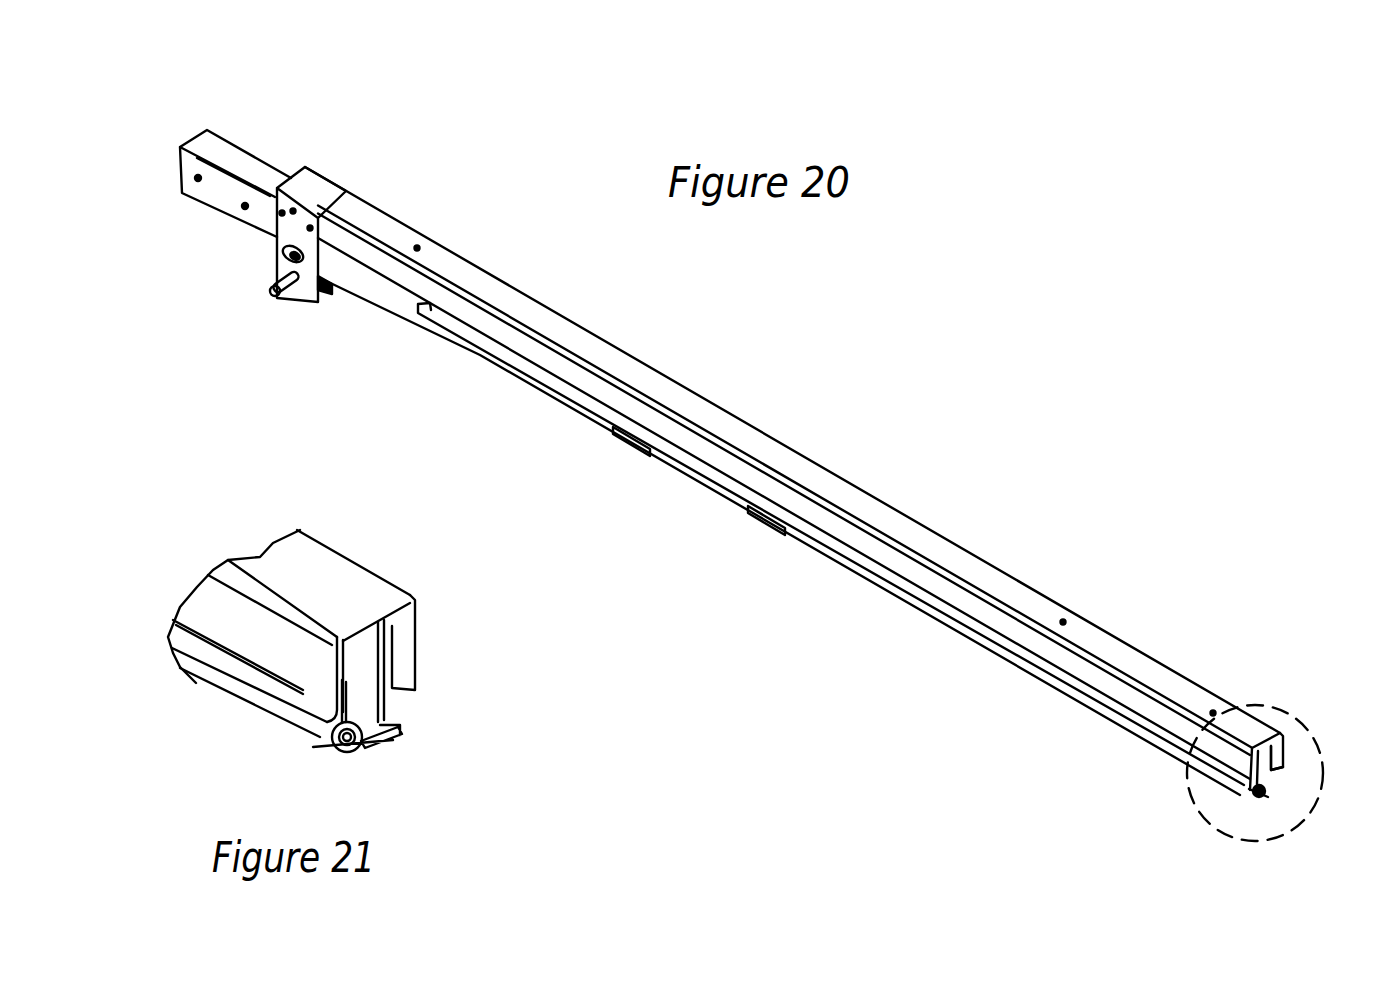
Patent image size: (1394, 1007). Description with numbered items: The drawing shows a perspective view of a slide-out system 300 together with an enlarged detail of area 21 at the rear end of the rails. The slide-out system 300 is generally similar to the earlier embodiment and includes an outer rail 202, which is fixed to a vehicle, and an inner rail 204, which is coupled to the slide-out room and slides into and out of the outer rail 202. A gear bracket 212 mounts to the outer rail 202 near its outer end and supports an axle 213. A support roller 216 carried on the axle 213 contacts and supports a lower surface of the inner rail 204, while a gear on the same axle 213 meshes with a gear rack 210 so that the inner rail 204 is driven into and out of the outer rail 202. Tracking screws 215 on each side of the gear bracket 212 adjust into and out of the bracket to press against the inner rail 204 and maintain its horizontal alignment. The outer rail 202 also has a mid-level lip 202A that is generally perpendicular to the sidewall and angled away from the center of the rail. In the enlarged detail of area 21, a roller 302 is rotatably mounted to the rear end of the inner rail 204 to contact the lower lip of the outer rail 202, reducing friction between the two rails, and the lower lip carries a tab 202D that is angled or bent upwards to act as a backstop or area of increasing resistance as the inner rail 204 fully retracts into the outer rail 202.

In FIG. 20, the outer rail 202 is at (473, 277).
In FIG. 21, the outer rail 202 is at (367, 566).
In FIG. 20, the mid-level lip 202A is at (478, 350).
In FIG. 21, the mid-level lip 202A is at (210, 658).
In FIG. 21, the tab 202D is at (372, 760).
In FIG. 20, the inner rail 204 is at (184, 147).
In FIG. 21, the inner rail 204 is at (390, 653).
In FIG. 20, the gear rack 210 is at (561, 415).
In FIG. 20, the gear bracket 212 is at (280, 266).
In FIG. 20, the axle 213 is at (277, 297).
In FIG. 20, the tracking screws 215 is at (285, 245).
In FIG. 20, the support roller 216 is at (328, 287).
In FIG. 20, the slide-out system 300 is at (1033, 398).
In FIG. 20, the roller 302 is at (1262, 800).
In FIG. 21, the roller 302 is at (333, 748).
In FIG. 20, the area 21 is at (1294, 712).